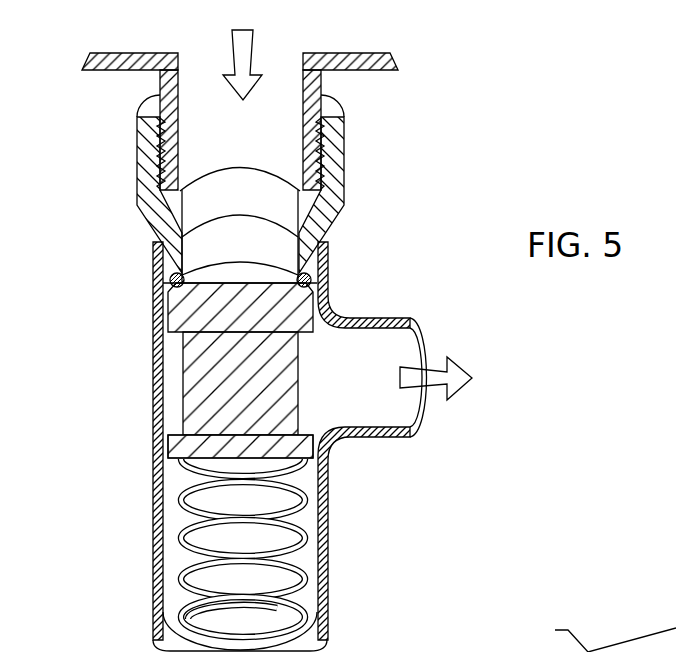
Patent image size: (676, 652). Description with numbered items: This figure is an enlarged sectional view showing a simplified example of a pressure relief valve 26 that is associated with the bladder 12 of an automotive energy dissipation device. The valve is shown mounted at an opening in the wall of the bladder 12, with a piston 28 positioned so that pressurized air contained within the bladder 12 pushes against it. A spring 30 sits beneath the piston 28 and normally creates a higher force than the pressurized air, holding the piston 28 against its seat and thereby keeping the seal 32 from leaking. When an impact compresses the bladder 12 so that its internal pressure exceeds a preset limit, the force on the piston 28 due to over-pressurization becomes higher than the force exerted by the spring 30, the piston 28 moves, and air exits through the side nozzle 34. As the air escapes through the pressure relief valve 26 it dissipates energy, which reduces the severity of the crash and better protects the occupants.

The bladder 12 is at (368, 330).
The pressure relief valve 26 is at (258, 446).
The piston 28 is at (199, 313).
The spring 30 is at (306, 558).
The seal 32 is at (282, 260).
The nozzle 34 is at (421, 372).